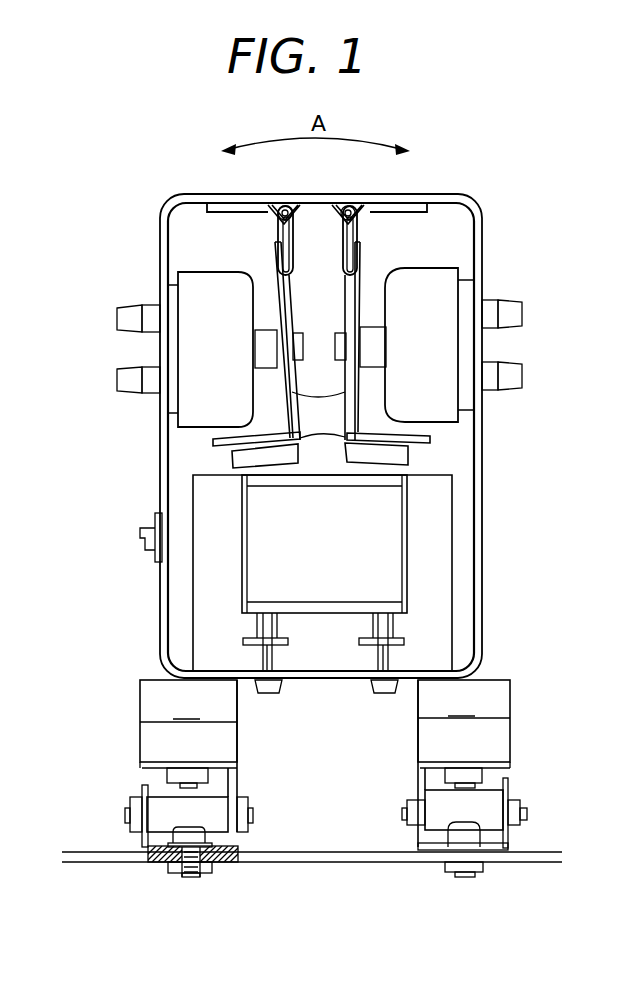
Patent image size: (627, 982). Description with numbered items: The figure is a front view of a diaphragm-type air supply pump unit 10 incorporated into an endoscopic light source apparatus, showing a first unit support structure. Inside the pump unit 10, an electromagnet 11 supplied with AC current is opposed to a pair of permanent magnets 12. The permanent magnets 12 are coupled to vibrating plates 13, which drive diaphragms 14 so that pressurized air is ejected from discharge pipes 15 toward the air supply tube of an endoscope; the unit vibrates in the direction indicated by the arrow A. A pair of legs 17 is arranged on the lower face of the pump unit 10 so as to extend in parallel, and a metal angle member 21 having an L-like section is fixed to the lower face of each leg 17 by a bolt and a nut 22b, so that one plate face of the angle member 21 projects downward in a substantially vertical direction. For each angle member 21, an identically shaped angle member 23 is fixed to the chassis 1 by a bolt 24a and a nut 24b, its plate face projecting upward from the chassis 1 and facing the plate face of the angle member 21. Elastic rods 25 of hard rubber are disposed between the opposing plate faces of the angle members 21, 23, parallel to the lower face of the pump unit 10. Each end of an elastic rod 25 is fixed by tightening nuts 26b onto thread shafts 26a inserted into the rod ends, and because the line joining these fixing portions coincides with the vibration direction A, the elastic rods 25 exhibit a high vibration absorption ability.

The chassis 1 is at (313, 858).
The air supply pump unit 10 is at (506, 206).
The electromagnet 11 is at (395, 525).
The permanent magnets 12 is at (237, 458).
The vibrating plates 13 is at (285, 302).
The diaphragms 14 is at (190, 360).
The discharge pipes 15 is at (116, 318).
The legs 17 is at (150, 738).
The angle member 21 is at (237, 782).
The nut 22b is at (205, 770).
The angle member 23 is at (142, 842).
The bolt 24a is at (190, 877).
The nut 24b is at (213, 863).
The elastic rods 25 is at (160, 808).
The thread shafts 26a is at (128, 812).
The nuts 26b is at (135, 828).